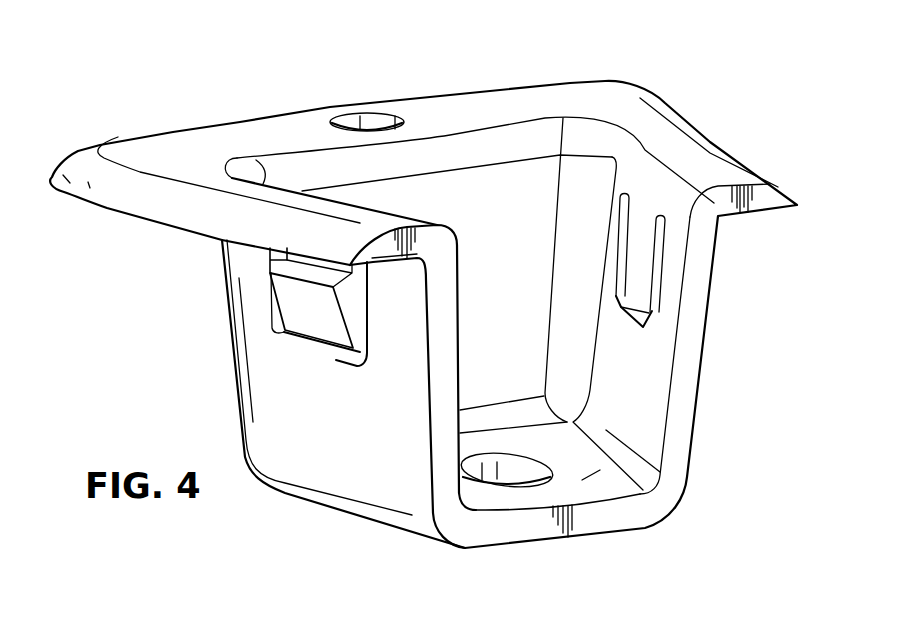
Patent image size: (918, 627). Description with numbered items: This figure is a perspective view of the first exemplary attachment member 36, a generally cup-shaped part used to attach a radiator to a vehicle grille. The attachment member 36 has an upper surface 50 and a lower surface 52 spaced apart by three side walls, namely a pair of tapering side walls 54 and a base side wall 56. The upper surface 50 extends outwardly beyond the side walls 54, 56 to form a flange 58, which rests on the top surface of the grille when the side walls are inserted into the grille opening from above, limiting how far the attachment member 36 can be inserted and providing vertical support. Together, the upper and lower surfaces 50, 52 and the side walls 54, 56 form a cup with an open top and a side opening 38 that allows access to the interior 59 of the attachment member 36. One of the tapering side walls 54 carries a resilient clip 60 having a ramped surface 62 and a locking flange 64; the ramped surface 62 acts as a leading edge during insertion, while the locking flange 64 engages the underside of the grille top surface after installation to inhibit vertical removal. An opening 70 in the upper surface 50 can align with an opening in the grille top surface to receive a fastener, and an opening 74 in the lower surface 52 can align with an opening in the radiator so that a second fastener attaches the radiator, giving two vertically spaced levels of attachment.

The attachment member 36 is at (635, 83).
The side opening 38 is at (645, 430).
The upper surface 50 is at (589, 97).
The lower surface 52 is at (590, 475).
The tapering side walls 54 is at (690, 340).
The base side wall 56 is at (496, 196).
The flange 58 is at (768, 212).
The interior 59 is at (584, 186).
The resilient clip 60 is at (643, 258).
The ramped surface 62 is at (330, 312).
The locking flange 64 is at (280, 261).
The opening 70 is at (365, 118).
The opening 74 is at (512, 481).